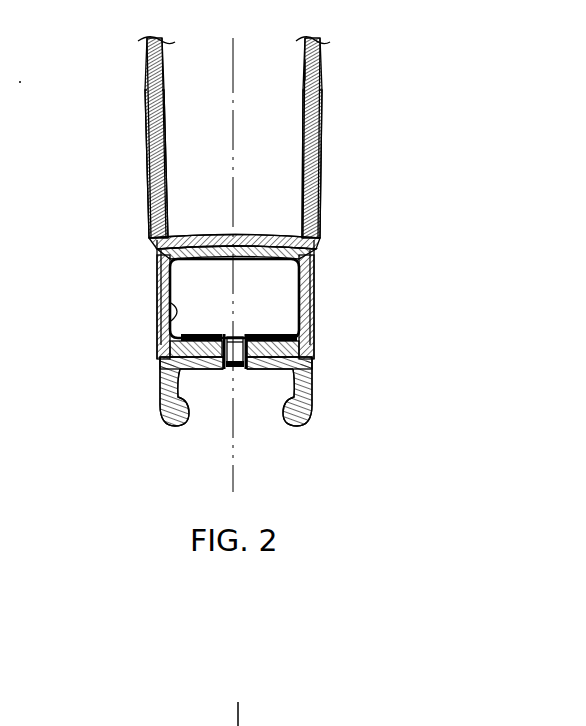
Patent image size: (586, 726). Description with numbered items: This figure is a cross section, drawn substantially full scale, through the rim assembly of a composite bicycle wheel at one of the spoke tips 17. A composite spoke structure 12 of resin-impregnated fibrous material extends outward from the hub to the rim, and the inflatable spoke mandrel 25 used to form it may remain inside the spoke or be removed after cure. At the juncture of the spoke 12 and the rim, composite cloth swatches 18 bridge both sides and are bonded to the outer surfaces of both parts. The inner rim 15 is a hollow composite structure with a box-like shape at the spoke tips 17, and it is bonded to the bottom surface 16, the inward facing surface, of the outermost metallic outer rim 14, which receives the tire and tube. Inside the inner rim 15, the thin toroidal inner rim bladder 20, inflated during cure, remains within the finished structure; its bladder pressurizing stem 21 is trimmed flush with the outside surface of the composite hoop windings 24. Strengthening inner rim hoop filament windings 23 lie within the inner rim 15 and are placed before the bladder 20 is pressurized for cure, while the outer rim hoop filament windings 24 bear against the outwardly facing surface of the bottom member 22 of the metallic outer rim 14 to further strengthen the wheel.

The composite spoke structure 12 is at (320, 62).
The inflatable spoke mandrel 25 is at (303, 73).
The composite cloth swatch 18 is at (148, 176).
The spoke tip 17 is at (193, 238).
The inner rim hoop filament winding 23 is at (198, 268).
The inner rim 15 is at (314, 272).
The inner rim bladder 20 is at (160, 330).
The bottom surface of outer rim 16 is at (310, 335).
The bottom member of metallic rim 22 is at (200, 372).
The outer rim 14 is at (310, 408).
The bladder pressurizing stem 21 is at (231, 372).
The outer rim hoop filament winding 24 is at (211, 375).